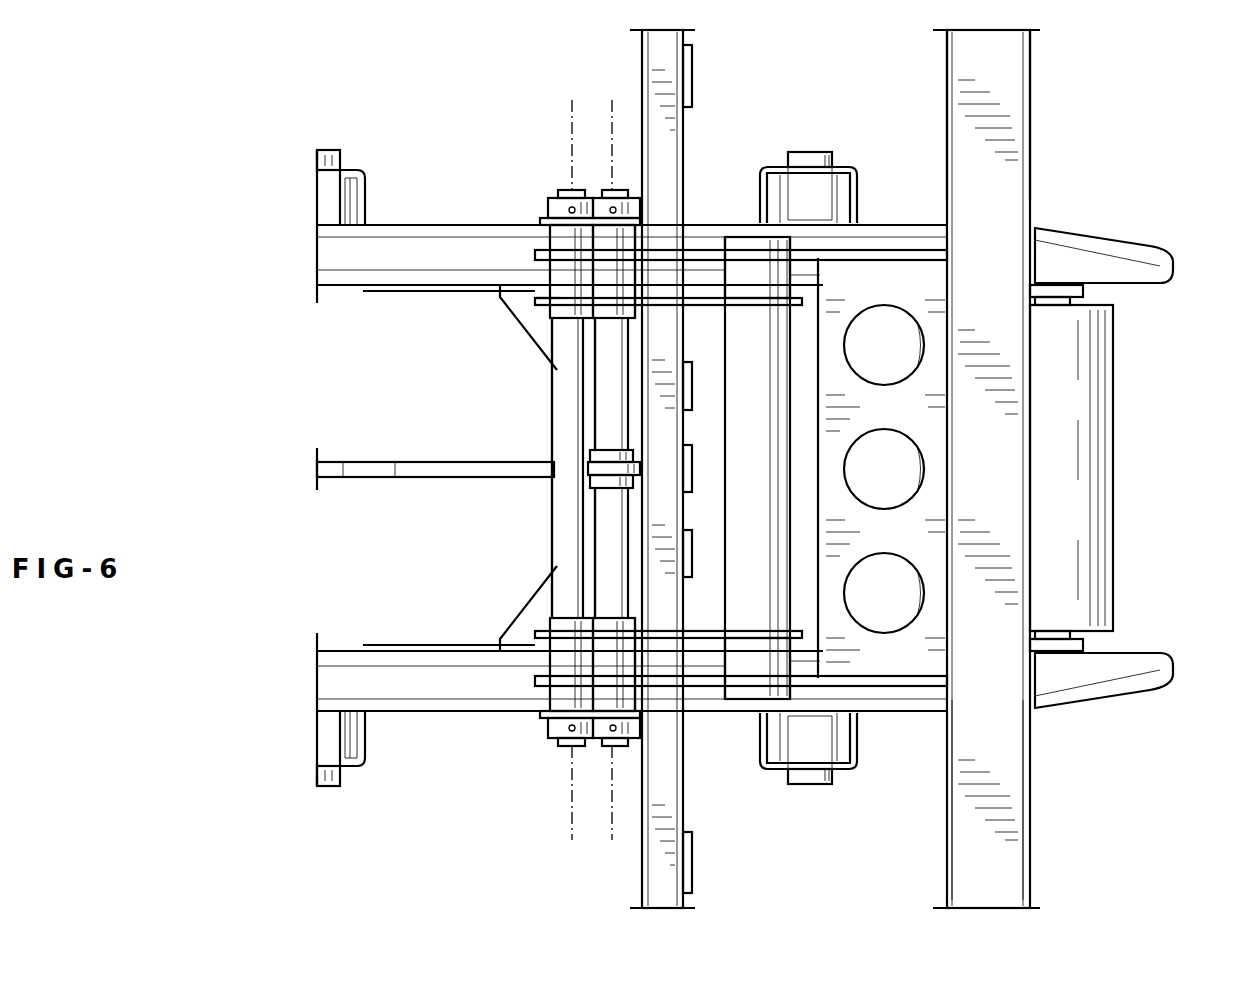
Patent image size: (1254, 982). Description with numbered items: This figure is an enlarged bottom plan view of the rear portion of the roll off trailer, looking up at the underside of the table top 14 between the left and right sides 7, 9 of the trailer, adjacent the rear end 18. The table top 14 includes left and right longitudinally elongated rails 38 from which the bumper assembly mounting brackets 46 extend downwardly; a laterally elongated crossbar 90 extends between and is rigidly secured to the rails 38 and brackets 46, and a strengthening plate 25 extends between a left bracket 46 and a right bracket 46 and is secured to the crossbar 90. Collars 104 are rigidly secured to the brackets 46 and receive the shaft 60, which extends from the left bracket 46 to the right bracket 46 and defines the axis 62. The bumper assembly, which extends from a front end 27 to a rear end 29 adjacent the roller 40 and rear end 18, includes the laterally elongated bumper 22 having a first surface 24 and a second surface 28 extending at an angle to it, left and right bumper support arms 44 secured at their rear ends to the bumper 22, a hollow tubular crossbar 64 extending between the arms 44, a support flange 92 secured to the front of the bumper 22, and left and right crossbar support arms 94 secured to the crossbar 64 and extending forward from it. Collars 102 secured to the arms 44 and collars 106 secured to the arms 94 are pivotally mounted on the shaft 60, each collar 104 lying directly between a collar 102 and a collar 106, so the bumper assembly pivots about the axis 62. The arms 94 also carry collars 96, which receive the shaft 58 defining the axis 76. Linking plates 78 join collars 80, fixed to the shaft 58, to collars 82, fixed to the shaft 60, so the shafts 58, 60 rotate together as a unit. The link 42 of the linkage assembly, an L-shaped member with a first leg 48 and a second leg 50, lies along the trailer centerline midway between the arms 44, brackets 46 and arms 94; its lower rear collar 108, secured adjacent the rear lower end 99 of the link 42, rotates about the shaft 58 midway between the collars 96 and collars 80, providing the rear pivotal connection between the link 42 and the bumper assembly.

The left side 7 is at (458, 116).
The right side 9 is at (458, 822).
The table top 14 is at (395, 214).
The rear end 18 is at (1200, 240).
The bumper 22 is at (1042, 775).
The first surface 24 is at (1005, 878).
The strengthening plate 25 is at (538, 318).
The front end 27 is at (528, 260).
The second surface 28 is at (1030, 812).
The rear end 29 is at (1046, 106).
The rails 38 is at (345, 262).
The roller 40 is at (1113, 378).
The link 42 is at (425, 455).
The support arms 44 is at (897, 240).
The bumper assembly mounting brackets 46 is at (432, 222).
The first leg 48 is at (335, 458).
The second leg 50 is at (463, 478).
The shaft 58 is at (612, 195).
The shaft 60 is at (552, 195).
The axis 62 is at (572, 104).
The crossbar 64 is at (750, 470).
The axis 76 is at (612, 104).
The linking plates 78 is at (548, 218).
The collars 80 is at (640, 212).
The collars 82 is at (558, 196).
The crossbar 90 is at (697, 78).
The support flange 92 is at (928, 500).
The support arms 94 is at (750, 305).
The collars 96 is at (613, 318).
The rear lower end 99 is at (732, 470).
The collars 102 is at (548, 248).
The collars 104 is at (525, 318).
The collars 106 is at (570, 318).
The lower rear collar 108 is at (605, 455).